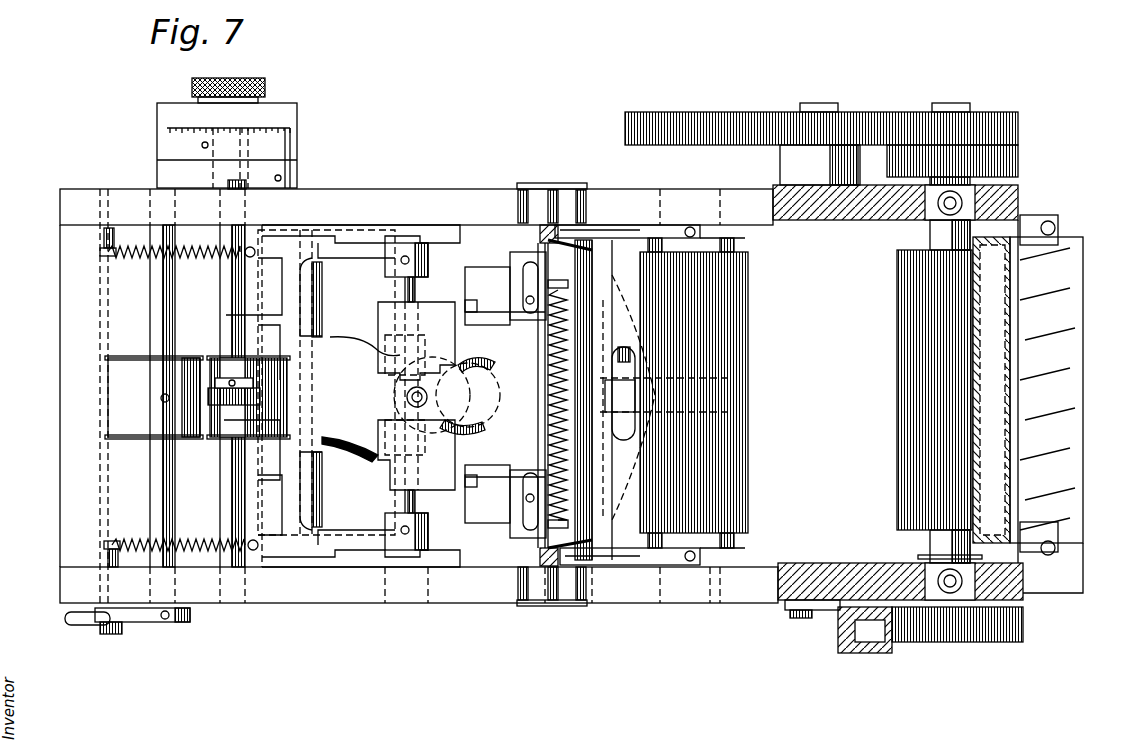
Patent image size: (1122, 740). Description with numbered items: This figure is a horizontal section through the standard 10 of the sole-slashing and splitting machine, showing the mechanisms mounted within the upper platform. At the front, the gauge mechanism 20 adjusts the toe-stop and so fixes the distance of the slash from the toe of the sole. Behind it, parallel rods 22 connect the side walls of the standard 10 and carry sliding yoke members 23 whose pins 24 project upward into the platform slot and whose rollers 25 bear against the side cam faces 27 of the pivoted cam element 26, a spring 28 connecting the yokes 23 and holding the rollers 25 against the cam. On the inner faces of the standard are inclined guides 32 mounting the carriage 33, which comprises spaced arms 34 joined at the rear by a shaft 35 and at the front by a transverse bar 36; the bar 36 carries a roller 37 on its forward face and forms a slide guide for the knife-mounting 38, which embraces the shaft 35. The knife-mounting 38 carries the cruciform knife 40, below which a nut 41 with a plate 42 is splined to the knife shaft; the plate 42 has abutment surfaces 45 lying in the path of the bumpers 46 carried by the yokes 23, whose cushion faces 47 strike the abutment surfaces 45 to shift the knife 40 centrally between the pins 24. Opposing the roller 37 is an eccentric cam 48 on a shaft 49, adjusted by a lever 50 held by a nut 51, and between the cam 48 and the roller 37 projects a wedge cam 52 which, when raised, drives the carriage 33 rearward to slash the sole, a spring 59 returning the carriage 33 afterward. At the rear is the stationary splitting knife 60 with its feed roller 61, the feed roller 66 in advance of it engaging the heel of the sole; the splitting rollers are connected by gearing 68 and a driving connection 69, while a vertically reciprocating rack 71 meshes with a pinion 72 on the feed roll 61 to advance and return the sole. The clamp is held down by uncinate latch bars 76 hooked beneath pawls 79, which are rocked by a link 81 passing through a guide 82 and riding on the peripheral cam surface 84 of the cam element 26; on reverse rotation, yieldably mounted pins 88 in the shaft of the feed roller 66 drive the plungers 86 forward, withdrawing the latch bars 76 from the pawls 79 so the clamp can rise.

The standard 10 is at (350, 189).
The gauge mechanism 20 is at (300, 118).
The parallel rods 22 is at (538, 234).
The yoke members 23 is at (500, 248).
The pins 24 is at (528, 295).
The rollers 25 is at (590, 240).
The cam element 26 is at (650, 412).
The side cam faces 27 is at (623, 400).
The spring 28 is at (580, 350).
The guides 32 is at (422, 225).
The carriage 33 is at (316, 288).
The spaced arms 34 is at (343, 258).
The shaft 35 is at (416, 290).
The transverse bar 36 is at (285, 505).
The roller 37 is at (262, 415).
The knife-mounting 38 is at (350, 444).
The cruciform knife 40 is at (431, 396).
The nut 41 is at (478, 365).
The plate 42 is at (462, 435).
The abutment surfaces 45 is at (398, 352).
The bumpers 46 is at (530, 300).
The cushion faces 47 is at (487, 318).
The eccentric cam 48 is at (125, 410).
The shaft 49 is at (158, 332).
The lever 50 is at (132, 622).
The nut 51 is at (105, 634).
The wedge cam 52 is at (208, 358).
The spring 59 is at (140, 257).
The stationary splitting knife 60 is at (1030, 400).
The feed roller 61 is at (905, 468).
The feed roller 66 is at (750, 505).
The gearing 68 is at (755, 112).
The driving connection 69 is at (1020, 160).
The rack 71 is at (868, 650).
The pinion 72 is at (965, 640).
The latch bars 76 is at (552, 235).
The pawls 79 is at (592, 252).
The link 81 is at (600, 420).
The guide 82 is at (655, 553).
The peripheral cam surface 84 is at (700, 380).
The plungers 86 is at (632, 232).
The yieldably mounted pins 88 is at (705, 236).